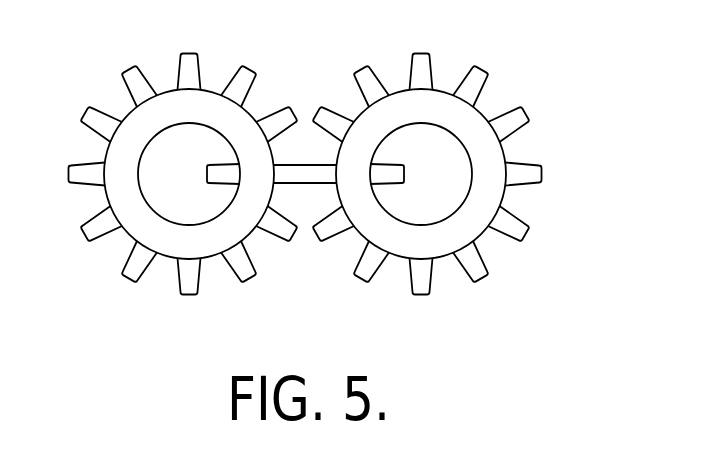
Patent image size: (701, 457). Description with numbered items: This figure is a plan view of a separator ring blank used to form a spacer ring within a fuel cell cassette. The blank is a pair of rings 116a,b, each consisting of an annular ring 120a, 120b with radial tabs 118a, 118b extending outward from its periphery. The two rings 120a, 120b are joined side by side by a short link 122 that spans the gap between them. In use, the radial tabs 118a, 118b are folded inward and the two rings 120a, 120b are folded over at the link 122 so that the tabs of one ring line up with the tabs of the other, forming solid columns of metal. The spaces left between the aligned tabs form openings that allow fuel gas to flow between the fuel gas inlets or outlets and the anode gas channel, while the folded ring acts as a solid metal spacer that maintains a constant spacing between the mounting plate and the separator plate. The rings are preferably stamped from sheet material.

The pair of rings 116a,b is at (588, 40).
The radial tabs 118a is at (130, 270).
The radial tabs 118b is at (363, 68).
The ring 120a is at (130, 122).
The ring 120b is at (487, 157).
The link 122 is at (298, 178).